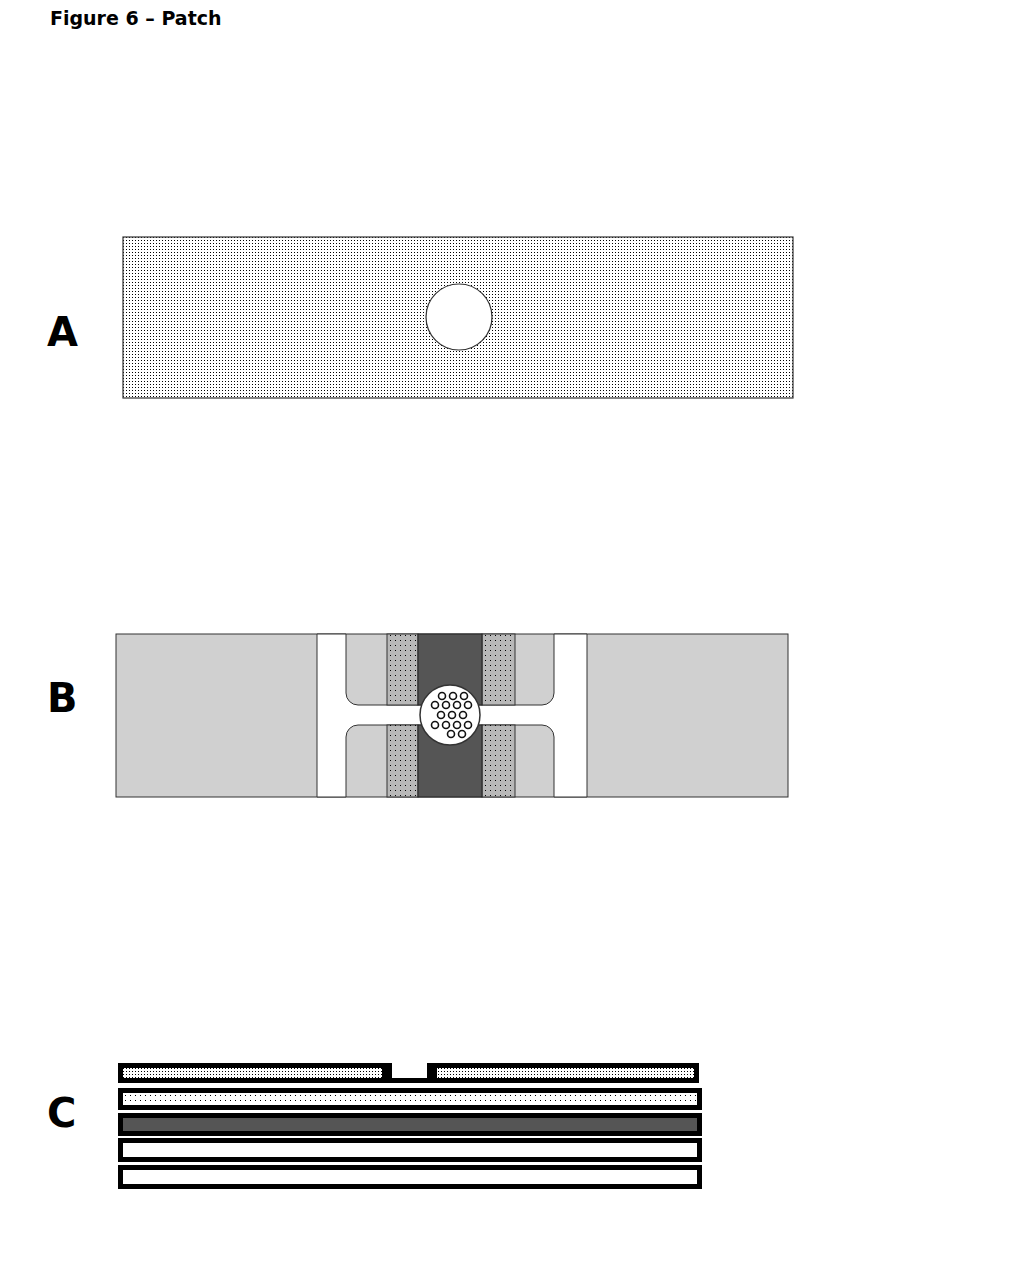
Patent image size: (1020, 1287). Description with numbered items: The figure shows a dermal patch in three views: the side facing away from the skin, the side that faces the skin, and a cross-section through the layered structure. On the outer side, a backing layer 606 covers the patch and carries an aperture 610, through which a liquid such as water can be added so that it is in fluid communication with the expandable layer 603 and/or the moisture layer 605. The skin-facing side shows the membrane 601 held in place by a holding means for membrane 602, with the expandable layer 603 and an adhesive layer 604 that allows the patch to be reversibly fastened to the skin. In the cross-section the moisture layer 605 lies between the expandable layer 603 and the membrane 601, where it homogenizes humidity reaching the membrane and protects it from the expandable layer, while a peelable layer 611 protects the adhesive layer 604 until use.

The membrane 601 is at (473, 715).
The holding means for membrane 602 is at (333, 660).
The expandable layer 603 is at (503, 658).
The adhesive layer 604 is at (257, 668).
The moisture layer 605 is at (455, 655).
The backing layer 606 is at (193, 297).
The aperture 610 is at (459, 303).
The peelable layer 611 is at (690, 1178).